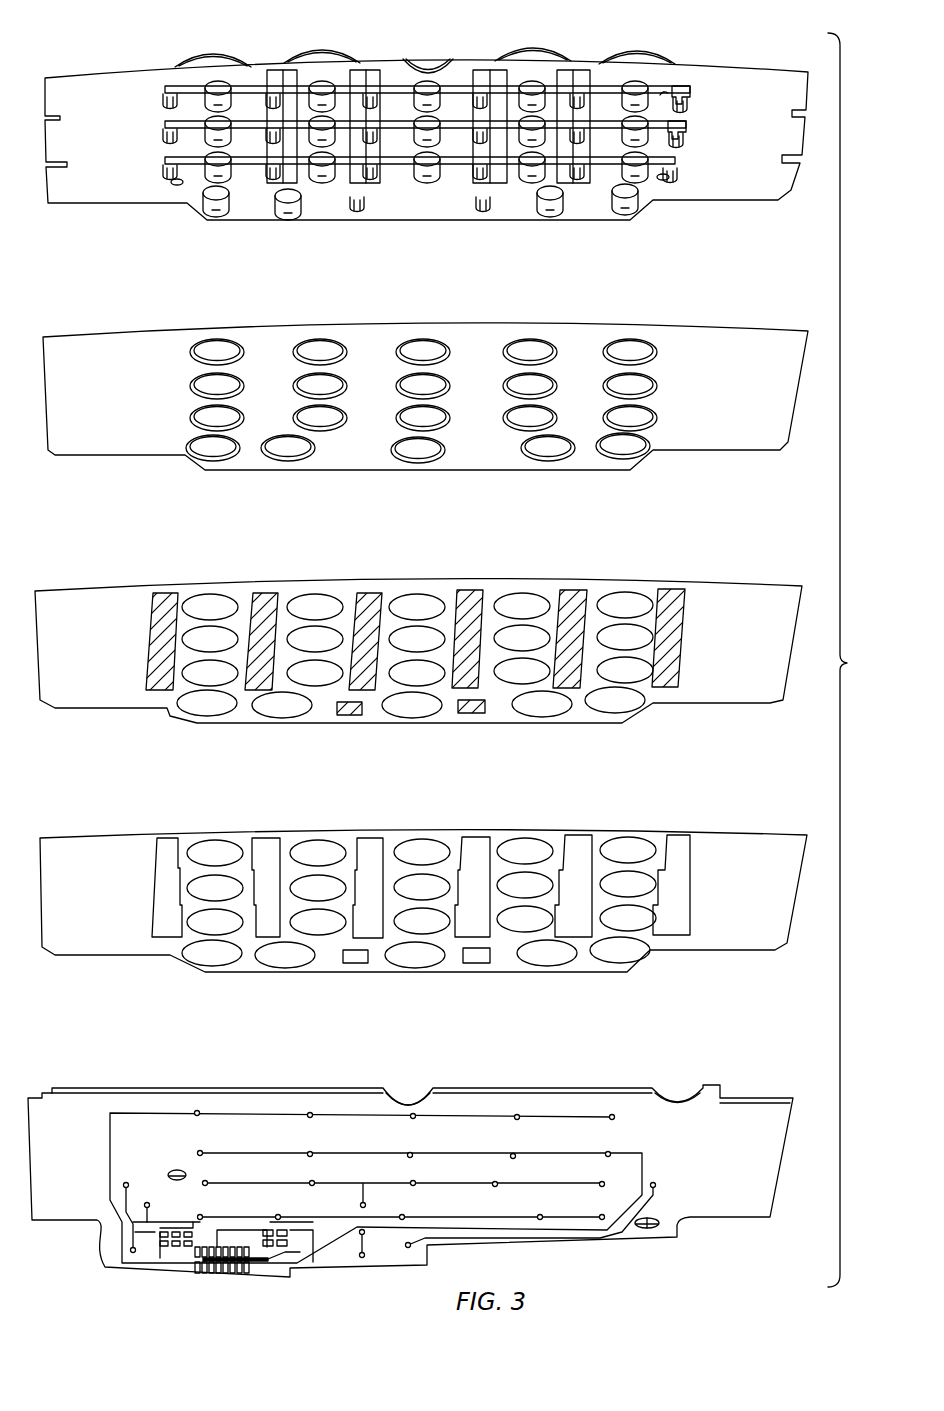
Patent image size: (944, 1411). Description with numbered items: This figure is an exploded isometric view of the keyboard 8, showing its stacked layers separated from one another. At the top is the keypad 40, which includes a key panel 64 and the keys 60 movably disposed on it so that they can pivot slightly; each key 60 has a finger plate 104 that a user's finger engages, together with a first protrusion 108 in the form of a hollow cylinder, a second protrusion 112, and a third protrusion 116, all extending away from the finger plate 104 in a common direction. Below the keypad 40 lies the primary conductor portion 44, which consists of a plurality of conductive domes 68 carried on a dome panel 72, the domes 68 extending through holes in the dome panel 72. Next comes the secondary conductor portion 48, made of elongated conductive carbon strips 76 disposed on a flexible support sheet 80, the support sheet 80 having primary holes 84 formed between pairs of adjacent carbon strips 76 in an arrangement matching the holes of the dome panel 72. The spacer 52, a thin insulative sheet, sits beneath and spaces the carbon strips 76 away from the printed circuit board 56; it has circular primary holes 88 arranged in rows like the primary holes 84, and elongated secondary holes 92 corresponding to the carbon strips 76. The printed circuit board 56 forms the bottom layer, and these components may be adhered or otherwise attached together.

The keyboard 8 is at (845, 660).
The keypad 40 is at (426, 114).
The primary conductor portion 44 is at (425, 367).
The secondary conductor portion 48 is at (418, 611).
The spacer 52 is at (423, 878).
The printed circuit board 56 is at (606, 1076).
The keys 60 is at (203, 52).
The key panel 64 is at (112, 72).
The conductive domes 68 is at (190, 350).
The dome panel 72 is at (546, 324).
The conductive carbon strips 76 is at (167, 593).
The flexible support sheet 80 is at (90, 585).
The primary holes 84 is at (318, 600).
The circular primary holes 88 is at (428, 846).
The elongated secondary holes 92 is at (485, 843).
The finger plate 104 is at (607, 80).
The first protrusion 108 is at (635, 97).
The second protrusion 112 is at (603, 108).
The third protrusion 116 is at (660, 93).